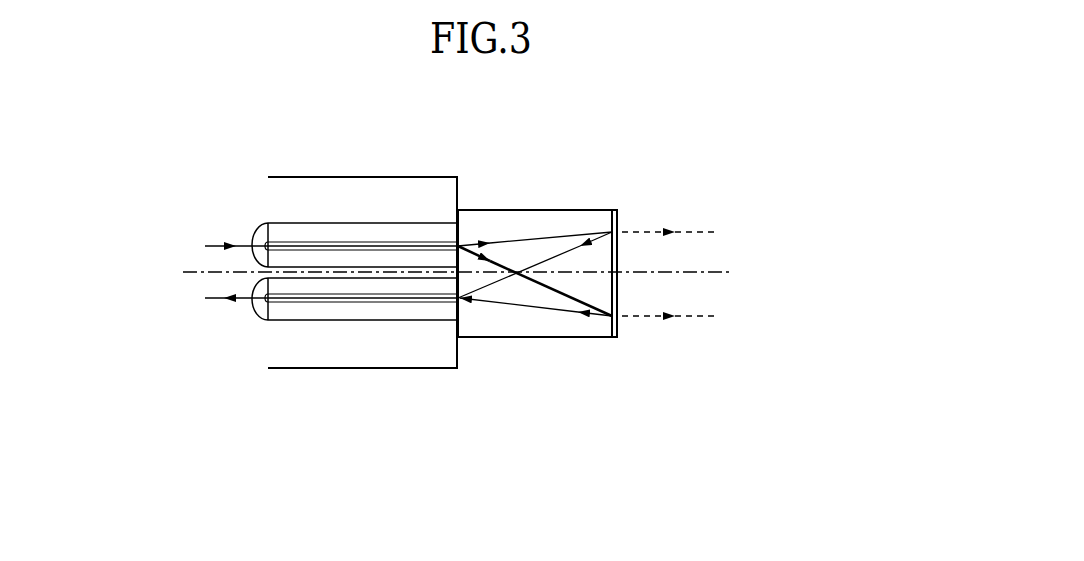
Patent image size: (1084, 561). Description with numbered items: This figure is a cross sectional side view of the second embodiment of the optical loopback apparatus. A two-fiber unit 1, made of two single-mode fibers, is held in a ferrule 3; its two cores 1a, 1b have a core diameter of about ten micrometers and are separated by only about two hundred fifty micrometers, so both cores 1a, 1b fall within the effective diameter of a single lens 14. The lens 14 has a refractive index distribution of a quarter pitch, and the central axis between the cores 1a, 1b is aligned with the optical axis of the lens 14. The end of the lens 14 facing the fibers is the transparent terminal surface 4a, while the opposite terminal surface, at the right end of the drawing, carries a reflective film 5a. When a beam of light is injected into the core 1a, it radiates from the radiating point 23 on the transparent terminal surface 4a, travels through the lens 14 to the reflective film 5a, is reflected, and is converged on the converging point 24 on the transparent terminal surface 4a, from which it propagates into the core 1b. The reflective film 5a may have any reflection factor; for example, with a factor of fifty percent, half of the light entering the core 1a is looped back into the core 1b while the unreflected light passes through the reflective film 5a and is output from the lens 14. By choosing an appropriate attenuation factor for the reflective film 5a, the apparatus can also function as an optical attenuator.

The two-fiber unit 1 is at (302, 322).
The core 1a is at (265, 243).
The core 1b is at (265, 303).
The ferrule 3 is at (282, 368).
The transparent terminal surface 4a is at (458, 218).
The reflective film 5a is at (617, 331).
The lens 14 is at (562, 337).
The radiating point 23 is at (466, 243).
The converging point 24 is at (463, 303).